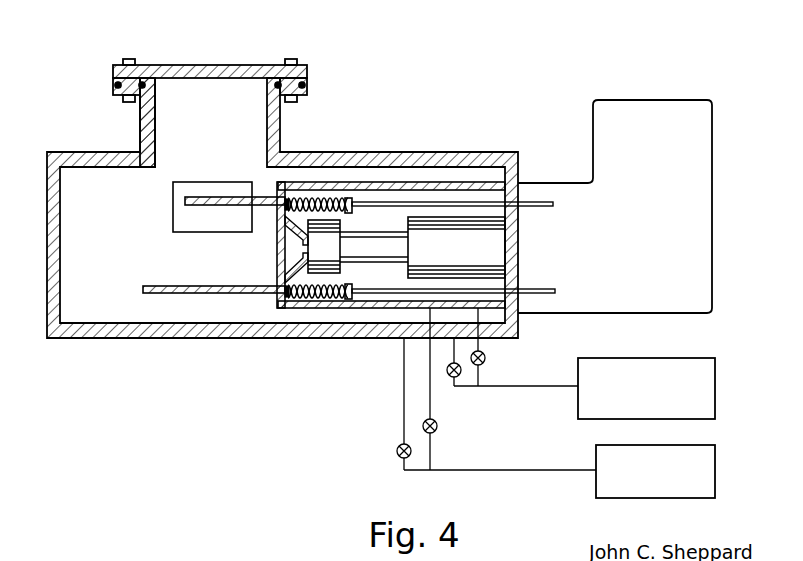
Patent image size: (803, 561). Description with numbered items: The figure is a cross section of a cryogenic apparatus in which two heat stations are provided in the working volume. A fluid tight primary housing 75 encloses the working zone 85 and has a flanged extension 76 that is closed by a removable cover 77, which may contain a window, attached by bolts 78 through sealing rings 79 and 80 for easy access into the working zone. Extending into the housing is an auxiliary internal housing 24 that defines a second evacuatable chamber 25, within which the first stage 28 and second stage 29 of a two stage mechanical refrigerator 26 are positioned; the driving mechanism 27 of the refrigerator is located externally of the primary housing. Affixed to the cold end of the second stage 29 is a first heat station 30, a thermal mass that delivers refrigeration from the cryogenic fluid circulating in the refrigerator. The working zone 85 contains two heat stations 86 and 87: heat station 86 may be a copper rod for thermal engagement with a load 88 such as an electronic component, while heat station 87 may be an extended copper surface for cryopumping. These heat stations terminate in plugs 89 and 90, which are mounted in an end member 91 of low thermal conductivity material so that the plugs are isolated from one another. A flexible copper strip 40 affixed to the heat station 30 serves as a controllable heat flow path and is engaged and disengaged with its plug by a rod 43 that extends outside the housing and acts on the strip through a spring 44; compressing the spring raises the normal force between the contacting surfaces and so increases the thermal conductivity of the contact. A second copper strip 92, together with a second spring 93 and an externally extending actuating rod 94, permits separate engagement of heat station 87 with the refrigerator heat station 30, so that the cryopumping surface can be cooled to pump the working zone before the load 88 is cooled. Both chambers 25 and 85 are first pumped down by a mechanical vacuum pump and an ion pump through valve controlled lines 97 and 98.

The auxiliary internal housing 24 is at (430, 182).
The second evacuatable chamber 25 is at (462, 197).
The mechanical refrigerator 26 is at (550, 176).
The driving mechanism 27 is at (643, 247).
The first stage 28 is at (455, 257).
The second stage 29 is at (370, 257).
The first heat station 30 is at (334, 257).
The flexible copper strip 40 is at (290, 202).
The rod 43 is at (392, 203).
The spring 44 is at (320, 198).
The primary housing 75 is at (383, 155).
The extension 76 is at (140, 118).
The removable cover 77 is at (220, 65).
The bolts 78 is at (291, 60).
The sealing ring 79 is at (148, 64).
The sealing ring 80 is at (302, 88).
The working zone 85 is at (90, 216).
The heat station 86 is at (212, 198).
The heat station 87 is at (170, 287).
The load 88 is at (190, 222).
The plug 89 is at (278, 273).
The plug 90 is at (283, 216).
The end member 91 is at (278, 257).
The second copper strip 92 is at (283, 297).
The second spring 93 is at (317, 299).
The actuating rod 94 is at (385, 293).
The valve-controlled line 97 is at (504, 386).
The valve-controlled line 98 is at (495, 470).